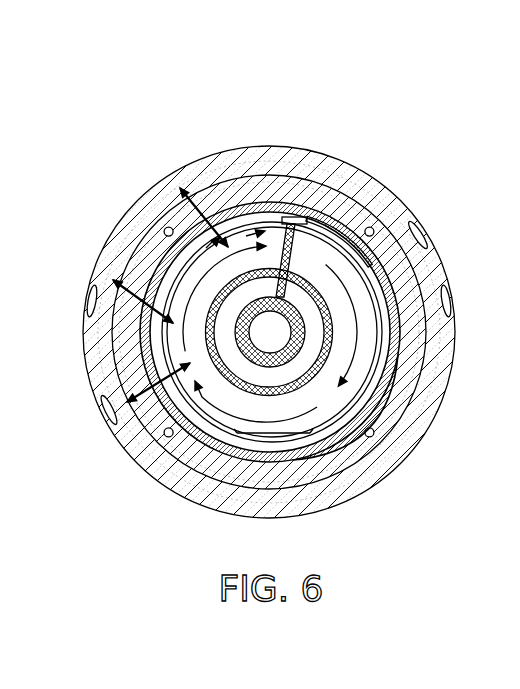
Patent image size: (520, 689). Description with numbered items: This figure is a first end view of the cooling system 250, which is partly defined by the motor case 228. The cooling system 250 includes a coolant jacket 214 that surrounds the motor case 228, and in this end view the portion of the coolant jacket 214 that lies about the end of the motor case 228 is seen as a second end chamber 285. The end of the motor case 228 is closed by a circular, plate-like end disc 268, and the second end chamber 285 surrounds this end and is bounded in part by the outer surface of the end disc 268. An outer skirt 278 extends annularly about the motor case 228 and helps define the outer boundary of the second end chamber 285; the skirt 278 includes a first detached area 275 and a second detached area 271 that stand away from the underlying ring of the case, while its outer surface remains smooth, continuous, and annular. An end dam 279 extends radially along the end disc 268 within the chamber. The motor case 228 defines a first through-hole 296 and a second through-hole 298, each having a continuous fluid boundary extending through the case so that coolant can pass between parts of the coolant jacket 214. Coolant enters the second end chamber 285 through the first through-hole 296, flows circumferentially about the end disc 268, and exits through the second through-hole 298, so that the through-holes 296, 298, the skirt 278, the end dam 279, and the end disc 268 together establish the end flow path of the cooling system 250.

The coolant jacket 214 is at (152, 283).
The motor case 228 is at (160, 401).
The cooling system 250 is at (196, 184).
The end disc 268 is at (317, 347).
The second detached area 271 is at (232, 212).
The first detached area 275 is at (332, 237).
The outer skirt 278 is at (290, 218).
The end dam 279 is at (358, 262).
The second end chamber 285 is at (172, 358).
The first through-hole 296 is at (363, 195).
The second through-hole 298 is at (243, 215).